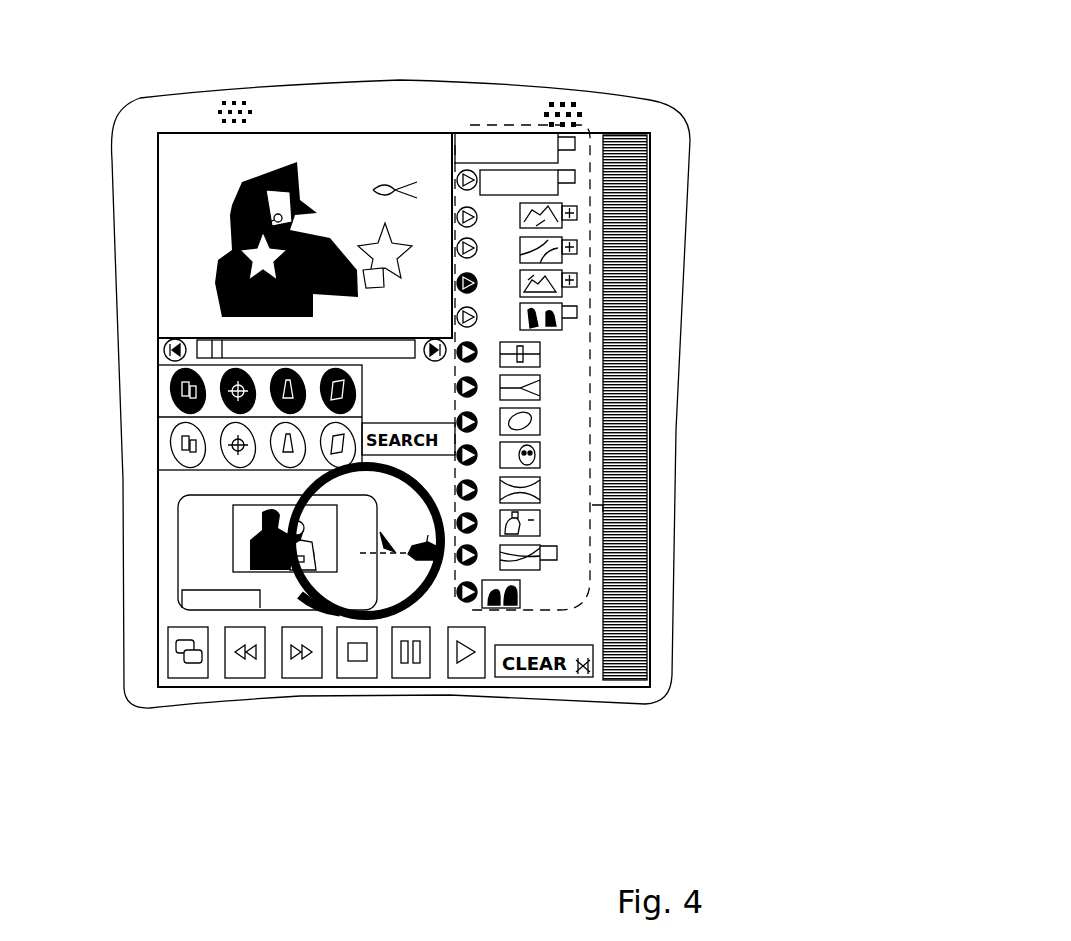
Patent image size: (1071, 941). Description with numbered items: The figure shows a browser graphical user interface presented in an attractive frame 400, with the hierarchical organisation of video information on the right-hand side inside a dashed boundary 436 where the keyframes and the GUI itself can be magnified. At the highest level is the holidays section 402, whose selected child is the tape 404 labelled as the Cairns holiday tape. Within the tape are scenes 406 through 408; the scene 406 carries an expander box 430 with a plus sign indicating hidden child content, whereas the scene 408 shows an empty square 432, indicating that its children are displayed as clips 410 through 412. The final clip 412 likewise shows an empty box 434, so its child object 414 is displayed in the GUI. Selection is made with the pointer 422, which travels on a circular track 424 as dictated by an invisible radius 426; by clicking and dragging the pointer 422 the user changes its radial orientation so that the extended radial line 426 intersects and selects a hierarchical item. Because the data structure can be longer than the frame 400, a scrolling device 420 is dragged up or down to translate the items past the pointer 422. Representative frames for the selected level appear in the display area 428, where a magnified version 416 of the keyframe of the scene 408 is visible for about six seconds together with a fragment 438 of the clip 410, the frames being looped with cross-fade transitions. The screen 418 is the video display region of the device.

The frame 400 is at (673, 133).
The holidays section 402 is at (495, 135).
The tape 404 is at (537, 172).
The scene 406 is at (562, 227).
The scene 408 is at (562, 328).
The clip 410 is at (540, 357).
The clip 412 is at (540, 568).
The object 414 is at (517, 603).
The magnified version 416 is at (232, 518).
The video display screen 418 is at (217, 193).
The scrolling device 420 is at (650, 137).
The pointer 422 is at (427, 535).
The circular track 424 is at (423, 597).
The invisible radius 426 is at (388, 542).
The display area 428 is at (327, 607).
The expander box 430 is at (577, 210).
The empty square 432 is at (577, 312).
The empty box 434 is at (557, 552).
The dashed boundary 436 is at (592, 505).
The fragment 438 is at (190, 598).